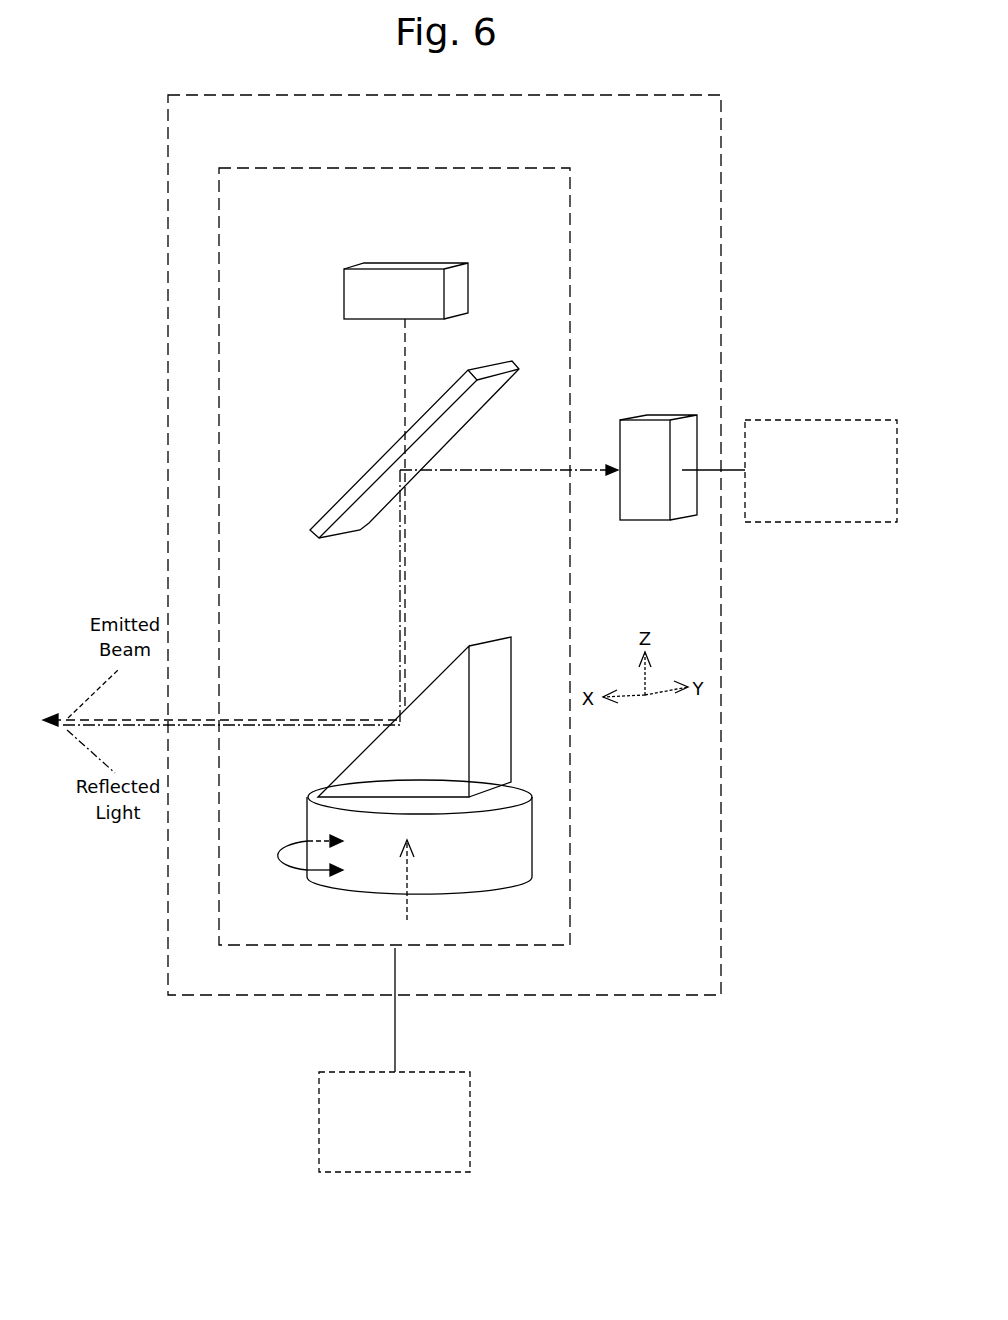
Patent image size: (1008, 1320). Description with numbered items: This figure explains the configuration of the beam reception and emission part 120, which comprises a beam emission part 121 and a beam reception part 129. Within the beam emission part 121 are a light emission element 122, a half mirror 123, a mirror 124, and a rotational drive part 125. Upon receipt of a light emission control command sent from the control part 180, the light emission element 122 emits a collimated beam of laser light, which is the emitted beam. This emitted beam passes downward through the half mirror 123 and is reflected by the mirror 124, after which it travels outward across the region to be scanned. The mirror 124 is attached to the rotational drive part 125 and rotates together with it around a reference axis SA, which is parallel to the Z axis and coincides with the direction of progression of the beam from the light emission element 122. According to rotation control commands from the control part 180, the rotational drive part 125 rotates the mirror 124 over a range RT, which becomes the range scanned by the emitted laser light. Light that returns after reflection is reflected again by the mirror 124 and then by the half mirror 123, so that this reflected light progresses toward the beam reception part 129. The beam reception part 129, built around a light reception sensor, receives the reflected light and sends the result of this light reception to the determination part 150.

The beam reception and emission part 120 is at (721, 218).
The beam emission part 121 is at (570, 295).
The light emission element 122 is at (343, 302).
The half mirror 123 is at (368, 468).
The mirror 124 is at (485, 642).
The rotational drive part 125 is at (307, 822).
The beam reception part 129 is at (637, 418).
The determination part 150 is at (800, 420).
The control part 180 is at (470, 1122).
The range of rotation RT is at (294, 859).
The reference axis SA is at (407, 956).